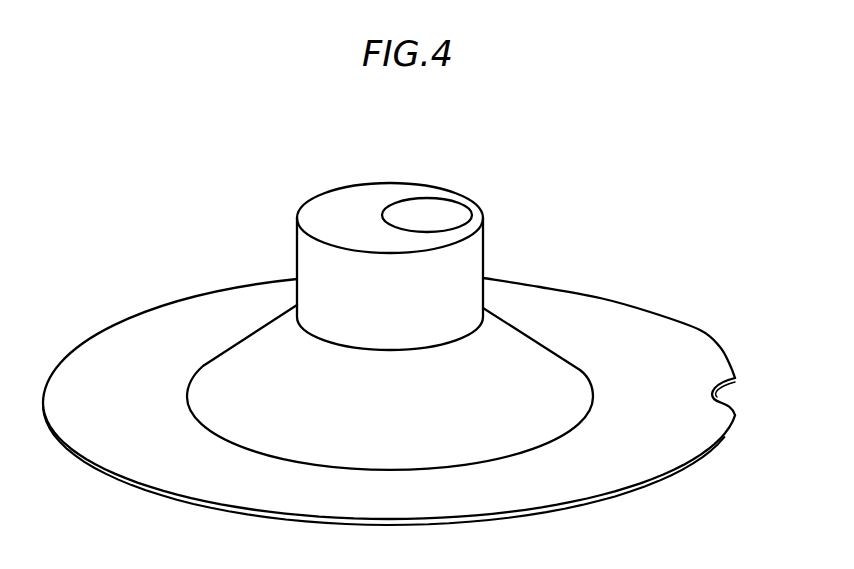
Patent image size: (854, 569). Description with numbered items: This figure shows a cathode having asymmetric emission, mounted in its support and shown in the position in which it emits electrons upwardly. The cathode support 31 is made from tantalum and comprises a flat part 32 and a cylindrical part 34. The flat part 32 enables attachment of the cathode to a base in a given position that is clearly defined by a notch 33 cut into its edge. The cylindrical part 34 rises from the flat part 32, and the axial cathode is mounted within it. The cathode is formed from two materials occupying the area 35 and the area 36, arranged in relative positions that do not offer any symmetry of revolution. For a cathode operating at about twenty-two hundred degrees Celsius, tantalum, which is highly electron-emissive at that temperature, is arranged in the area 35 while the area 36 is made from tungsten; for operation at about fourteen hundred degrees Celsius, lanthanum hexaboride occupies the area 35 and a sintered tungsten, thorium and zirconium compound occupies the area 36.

The cathode support 31 is at (235, 382).
The flat part 32 is at (637, 327).
The notch 33 is at (728, 398).
The cylindrical part 34 is at (468, 275).
The cathode area of first material 35 is at (458, 209).
The cathode area of second material 36 is at (315, 207).